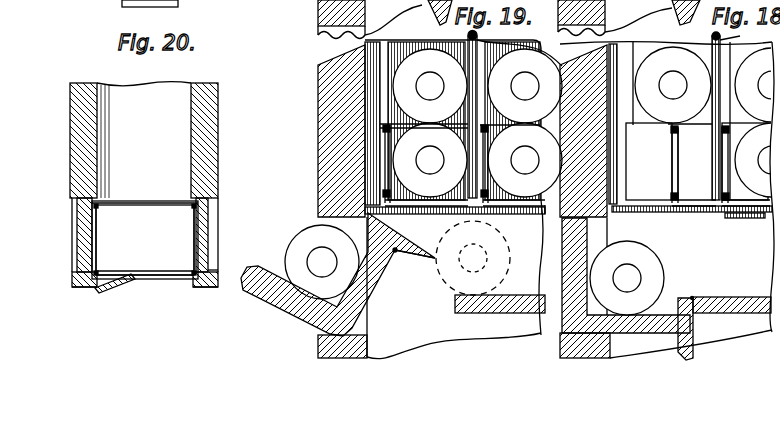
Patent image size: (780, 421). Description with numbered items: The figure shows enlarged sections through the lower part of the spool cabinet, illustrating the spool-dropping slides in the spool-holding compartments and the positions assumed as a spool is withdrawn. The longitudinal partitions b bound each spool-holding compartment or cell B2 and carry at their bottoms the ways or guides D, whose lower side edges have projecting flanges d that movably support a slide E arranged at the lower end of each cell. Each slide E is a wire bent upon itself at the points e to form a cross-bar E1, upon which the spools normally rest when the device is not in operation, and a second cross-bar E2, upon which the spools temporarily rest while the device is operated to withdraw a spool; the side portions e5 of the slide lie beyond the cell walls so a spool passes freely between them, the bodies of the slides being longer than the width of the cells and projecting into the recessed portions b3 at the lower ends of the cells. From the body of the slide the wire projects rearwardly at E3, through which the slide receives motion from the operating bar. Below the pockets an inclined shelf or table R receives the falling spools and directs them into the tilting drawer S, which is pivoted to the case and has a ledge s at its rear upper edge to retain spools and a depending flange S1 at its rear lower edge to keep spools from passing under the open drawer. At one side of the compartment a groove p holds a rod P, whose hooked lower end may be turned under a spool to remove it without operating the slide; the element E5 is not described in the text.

In FIG. 20, the longitudinal partition b is at (72, 145).
In FIG. 19, the longitudinal partition b is at (429, 199).
In FIG. 18, the longitudinal partition b is at (666, 200).
In FIG. 20, the recessed portion b3 is at (77, 233).
In FIG. 19, the recessed portion b3 is at (464, 121).
In FIG. 18, the recessed portion b3 is at (626, 144).
In FIG. 20, the spool-holding compartment or cell B2 is at (144, 141).
In FIG. 20, the slide E is at (145, 240).
In FIG. 19, the slide E is at (465, 165).
In FIG. 18, the slide E is at (721, 166).
In FIG. 20, the cross-bar E1 is at (150, 264).
In FIG. 19, the cross-bar E1 is at (436, 214).
In FIG. 18, the cross-bar E1 is at (716, 212).
In FIG. 20, the second cross-bar E2 is at (150, 216).
In FIG. 19, the second cross-bar E2 is at (386, 128).
In FIG. 18, the second cross-bar E2 is at (676, 127).
In FIG. 20, the rearwardly projecting portion E3 is at (102, 292).
In FIG. 18, the rearwardly projecting portion E3 is at (745, 228).
In FIG. 19, the end plate E5 is at (530, 214).
In FIG. 20, the bending point e is at (98, 206).
In FIG. 19, the bending point e is at (380, 197).
In FIG. 18, the bending point e is at (700, 163).
In FIG. 20, the side portion e5 is at (100, 246).
In FIG. 19, the side portion e5 is at (388, 170).
In FIG. 18, the side portion e5 is at (665, 164).
In FIG. 20, the projecting flange d is at (218, 280).
In FIG. 20, the way or guide D is at (92, 290).
In FIG. 19, the way or guide D is at (496, 207).
In FIG. 18, the way or guide D is at (700, 206).
In FIG. 19, the rod P is at (466, 34).
In FIG. 18, the rod P is at (716, 34).
In FIG. 19, the groove p is at (480, 38).
In FIG. 18, the groove p is at (726, 40).
In FIG. 19, the inclined shelf or table R is at (500, 294).
In FIG. 18, the inclined shelf or table R is at (732, 292).
In FIG. 19, the tilting drawer S is at (290, 306).
In FIG. 18, the tilting drawer S is at (588, 250).
In FIG. 19, the depending flange S1 is at (424, 258).
In FIG. 18, the depending flange S1 is at (694, 340).
In FIG. 19, the ledge s is at (428, 212).
In FIG. 18, the ledge s is at (693, 290).